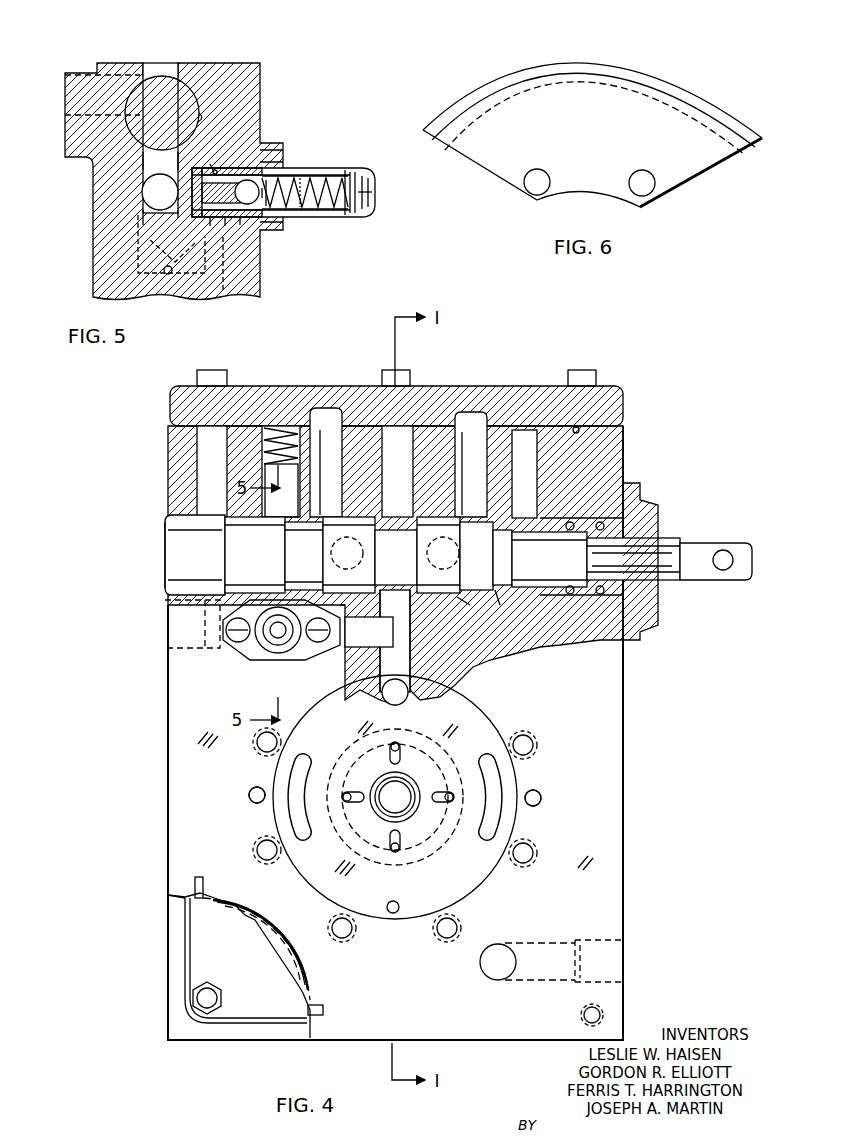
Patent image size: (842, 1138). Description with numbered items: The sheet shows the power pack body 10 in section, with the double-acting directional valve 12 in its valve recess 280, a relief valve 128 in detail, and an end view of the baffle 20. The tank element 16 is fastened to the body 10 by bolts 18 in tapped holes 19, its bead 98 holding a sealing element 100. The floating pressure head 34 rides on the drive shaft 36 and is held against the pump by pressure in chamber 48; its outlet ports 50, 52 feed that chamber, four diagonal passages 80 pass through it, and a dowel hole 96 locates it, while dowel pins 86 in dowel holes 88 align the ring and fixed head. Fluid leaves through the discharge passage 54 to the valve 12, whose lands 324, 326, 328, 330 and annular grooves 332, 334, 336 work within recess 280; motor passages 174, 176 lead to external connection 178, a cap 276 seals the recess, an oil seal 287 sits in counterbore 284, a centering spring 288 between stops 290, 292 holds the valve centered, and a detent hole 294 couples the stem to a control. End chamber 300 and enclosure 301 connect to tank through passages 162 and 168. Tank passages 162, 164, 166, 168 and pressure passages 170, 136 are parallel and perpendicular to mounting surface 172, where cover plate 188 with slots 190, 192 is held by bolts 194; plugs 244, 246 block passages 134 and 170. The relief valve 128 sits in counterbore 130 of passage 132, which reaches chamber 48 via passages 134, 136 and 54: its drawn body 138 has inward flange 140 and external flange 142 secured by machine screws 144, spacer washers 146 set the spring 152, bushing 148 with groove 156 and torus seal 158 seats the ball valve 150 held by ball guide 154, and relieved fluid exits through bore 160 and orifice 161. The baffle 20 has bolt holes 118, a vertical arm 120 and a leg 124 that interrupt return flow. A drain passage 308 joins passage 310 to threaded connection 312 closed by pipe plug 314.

In FIG. 5, the body 10 is at (174, 181).
In FIG. 4, the body 10 is at (572, 697).
In FIG. 5, the directional valve 12 is at (162, 113).
In FIG. 4, the directional valve 12 is at (665, 572).
In FIG. 4, the open end tank element 16 is at (280, 965).
In FIG. 4, the bolts 18 is at (212, 1008).
In FIG. 4, the tapped holes 19 is at (583, 1016).
In FIG. 6, the baffle 20 is at (577, 145).
In FIG. 4, the floating pressure head 34 is at (311, 750).
In FIG. 4, the drive shaft 36 is at (395, 797).
In FIG. 5, the pressure chamber 48 is at (262, 277).
In FIG. 4, the outlet port 50 is at (487, 835).
In FIG. 4, the outlet port 52 is at (305, 810).
In FIG. 5, the discharge passage 54 is at (170, 275).
In FIG. 4, the discharge passage 54 is at (410, 694).
In FIG. 4, the diagonal passages 80 is at (395, 852).
In FIG. 4, the dowel pins 86 is at (250, 790).
In FIG. 4, the dowel holes 88 is at (252, 803).
In FIG. 4, the dowel hole 96 is at (398, 903).
In FIG. 4, the double reverse curved bead 98 is at (195, 953).
In FIG. 4, the sealing element 100 is at (197, 877).
In FIG. 6, the bolt holes 118 is at (527, 178).
In FIG. 6, the vertical arm 120 is at (718, 170).
In FIG. 6, the leg of baffle 124 is at (678, 88).
In FIG. 5, the relief valve 128 is at (325, 157).
In FIG. 4, the relief valve 128 is at (300, 650).
In FIG. 5, the body counterbore 130 is at (238, 225).
In FIG. 5, the passage 132 is at (171, 244).
In FIG. 5, the passage 134 is at (150, 205).
In FIG. 4, the passage 134 is at (369, 632).
In FIG. 5, the pressure passage 136 is at (142, 222).
In FIG. 4, the pressure passage 136 is at (470, 465).
In FIG. 5, the relief valve body 138 is at (362, 222).
In FIG. 4, the relief valve body 138 is at (278, 653).
In FIG. 5, the inwardly projecting flange 140 is at (376, 188).
In FIG. 5, the external flange 142 is at (270, 150).
In FIG. 4, the external flange 142 is at (258, 660).
In FIG. 4, the machine screws 144 is at (238, 642).
In FIG. 5, the spacer washers 146 is at (360, 170).
In FIG. 5, the bushing 148 is at (210, 163).
In FIG. 5, the ball valve 150 is at (238, 192).
In FIG. 5, the spring 152 is at (308, 222).
In FIG. 5, the ball guide 154 is at (275, 220).
In FIG. 5, the annular groove 156 is at (215, 170).
In FIG. 5, the torus shaped seal 158 is at (212, 230).
In FIG. 5, the internal bore 160 is at (300, 172).
In FIG. 5, the orifice 161 is at (370, 200).
In FIG. 4, the orifice 161 is at (352, 605).
In FIG. 4, the tank passage 162 is at (220, 426).
In FIG. 4, the tank passage 164 is at (330, 468).
In FIG. 4, the tank passage 166 is at (458, 430).
In FIG. 4, the tank passage 168 is at (540, 432).
In FIG. 5, the pressure passage 170 is at (160, 70).
In FIG. 4, the pressure passage 170 is at (272, 470).
In FIG. 4, the mounting surface 172 is at (580, 441).
In FIG. 4, the motor passage 174 is at (347, 553).
In FIG. 5, the motor passage 176 is at (143, 152).
In FIG. 4, the motor passage 176 is at (443, 553).
In FIG. 5, the external connection 178 is at (70, 120).
In FIG. 4, the cover plate 188 is at (393, 457).
In FIG. 4, the slot 190 is at (326, 410).
In FIG. 4, the slot 192 is at (485, 418).
In FIG. 4, the bolts 194 is at (222, 370).
In FIG. 4, the plug 244 is at (168, 627).
In FIG. 4, the plug 246 is at (285, 428).
In FIG. 4, the cap 276 is at (166, 545).
In FIG. 5, the valve recess 280 is at (200, 114).
In FIG. 4, the counterbore 284 is at (598, 600).
In FIG. 4, the oil seal 287 is at (568, 520).
In FIG. 4, the centering spring 288 is at (602, 520).
In FIG. 4, the stop 290 is at (549, 559).
In FIG. 4, the stop 292 is at (665, 540).
In FIG. 4, the detent hole 294 is at (722, 550).
In FIG. 4, the end chamber 300 is at (195, 555).
In FIG. 4, the enclosure 301 is at (505, 590).
In FIG. 4, the drain passage 308 is at (496, 980).
In FIG. 4, the passage 310 is at (545, 943).
In FIG. 4, the external threaded connection 312 is at (615, 943).
In FIG. 4, the pipe plug 314 is at (610, 966).
In FIG. 4, the land 324 is at (255, 555).
In FIG. 4, the land 326 is at (349, 555).
In FIG. 4, the land 328 is at (417, 555).
In FIG. 4, the land 330 is at (500, 608).
In FIG. 4, the annular groove 332 is at (304, 556).
In FIG. 4, the annular groove 334 is at (474, 605).
In FIG. 4, the annular groove 336 is at (476, 592).